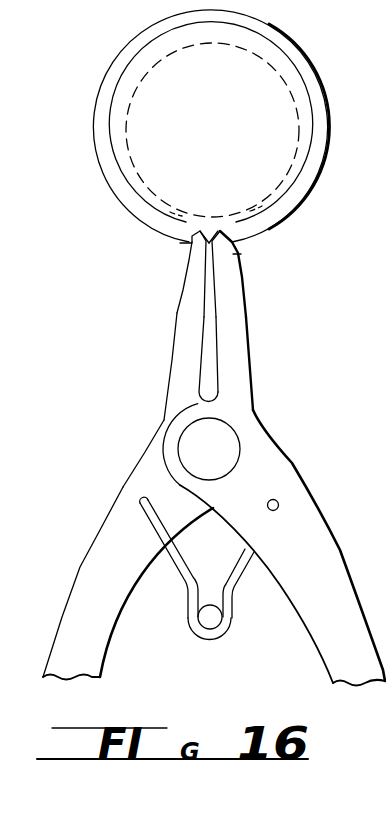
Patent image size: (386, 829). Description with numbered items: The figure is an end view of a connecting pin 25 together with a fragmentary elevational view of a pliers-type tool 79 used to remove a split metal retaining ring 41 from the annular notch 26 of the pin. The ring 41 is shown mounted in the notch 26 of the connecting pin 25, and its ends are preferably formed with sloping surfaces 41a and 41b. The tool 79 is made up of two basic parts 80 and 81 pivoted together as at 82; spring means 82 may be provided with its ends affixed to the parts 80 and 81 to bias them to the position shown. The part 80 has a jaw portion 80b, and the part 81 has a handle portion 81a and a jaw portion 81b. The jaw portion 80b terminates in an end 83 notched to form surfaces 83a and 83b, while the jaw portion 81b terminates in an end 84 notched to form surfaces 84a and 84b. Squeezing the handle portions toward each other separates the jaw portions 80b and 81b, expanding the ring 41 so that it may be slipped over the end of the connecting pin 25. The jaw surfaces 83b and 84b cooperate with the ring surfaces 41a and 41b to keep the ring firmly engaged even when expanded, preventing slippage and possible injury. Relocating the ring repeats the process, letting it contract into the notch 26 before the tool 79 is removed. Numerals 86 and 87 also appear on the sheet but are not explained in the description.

The connecting pin 25 is at (212, 130).
The annular notch 26 is at (240, 27).
The split metal ring 41 is at (301, 72).
The sloping surface 41a is at (256, 209).
The sloping surface 41b is at (177, 213).
The pliers-type tool 79 is at (289, 458).
The part 80 is at (321, 529).
The jaw portion 80b is at (238, 312).
The part 81 is at (130, 490).
The handle portion 81a is at (105, 563).
The jaw portion 81b is at (179, 315).
The pivot and spring means 82 is at (225, 440).
The end 83 is at (239, 276).
The surface 83a is at (241, 257).
The surface 83b is at (223, 230).
The end 84 is at (185, 279).
The surface 84a is at (184, 247).
The surface 84b is at (199, 230).
The adjacent part 86 is at (372, 479).
The adjacent part 87 is at (366, 438).